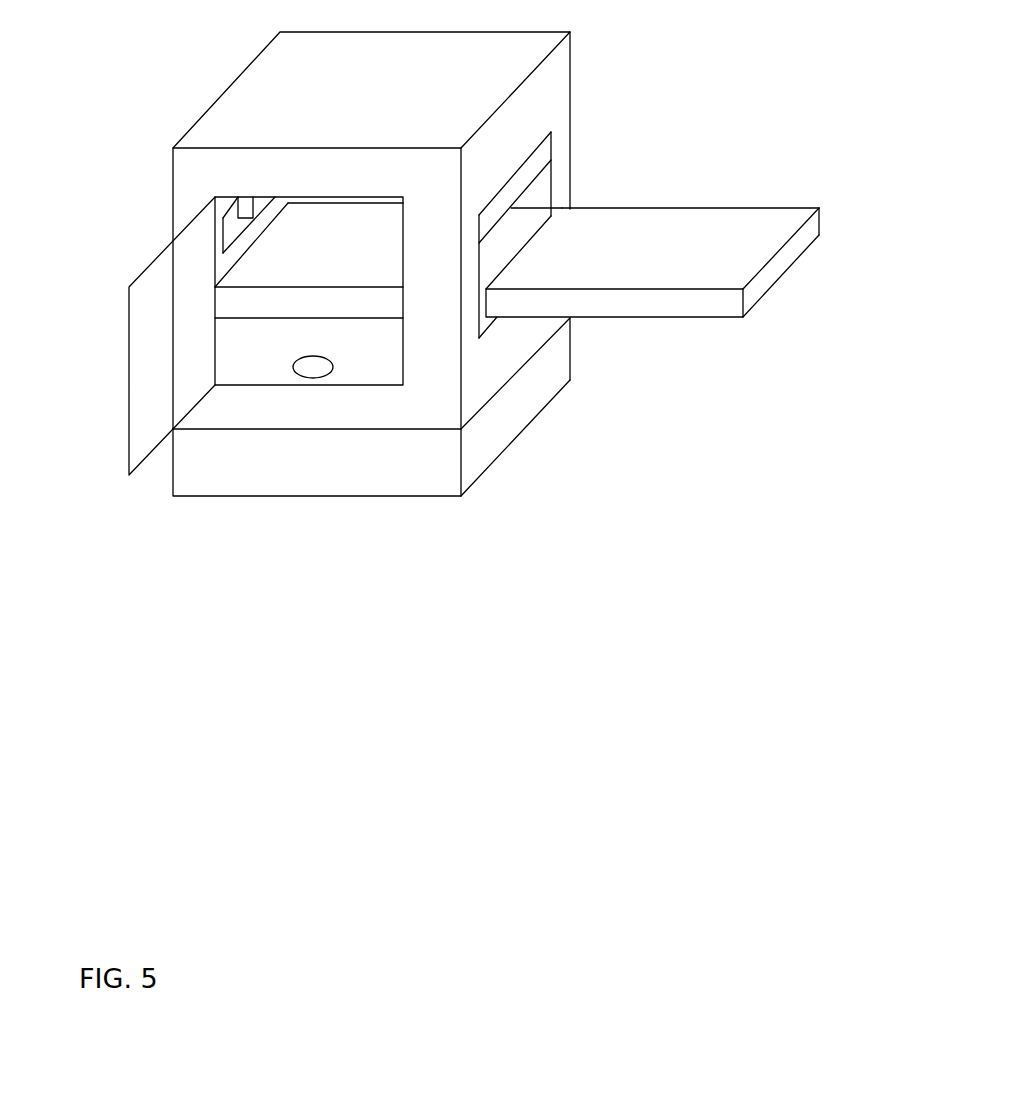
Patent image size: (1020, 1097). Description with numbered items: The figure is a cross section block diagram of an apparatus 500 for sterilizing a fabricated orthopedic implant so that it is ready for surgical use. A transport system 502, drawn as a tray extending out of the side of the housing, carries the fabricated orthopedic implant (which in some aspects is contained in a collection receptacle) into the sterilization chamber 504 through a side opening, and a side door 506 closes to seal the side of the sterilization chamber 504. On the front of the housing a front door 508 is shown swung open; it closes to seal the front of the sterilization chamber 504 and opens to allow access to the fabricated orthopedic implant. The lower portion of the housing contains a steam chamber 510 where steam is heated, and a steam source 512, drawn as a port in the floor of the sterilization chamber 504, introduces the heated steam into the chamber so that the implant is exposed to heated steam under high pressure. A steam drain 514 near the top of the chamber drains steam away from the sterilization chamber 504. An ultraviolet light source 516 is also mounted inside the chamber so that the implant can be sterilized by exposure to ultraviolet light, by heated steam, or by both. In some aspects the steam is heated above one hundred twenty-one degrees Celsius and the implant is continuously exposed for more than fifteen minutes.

The apparatus 500 is at (745, 958).
The transport system 502 is at (700, 312).
The sterilization chamber 504 is at (520, 228).
The side door 506 is at (535, 165).
The front door 508 is at (153, 453).
The steam chamber 510 is at (485, 463).
The steam source 512 is at (317, 378).
The steam drain 514 is at (246, 196).
The ultraviolet light source 516 is at (219, 240).